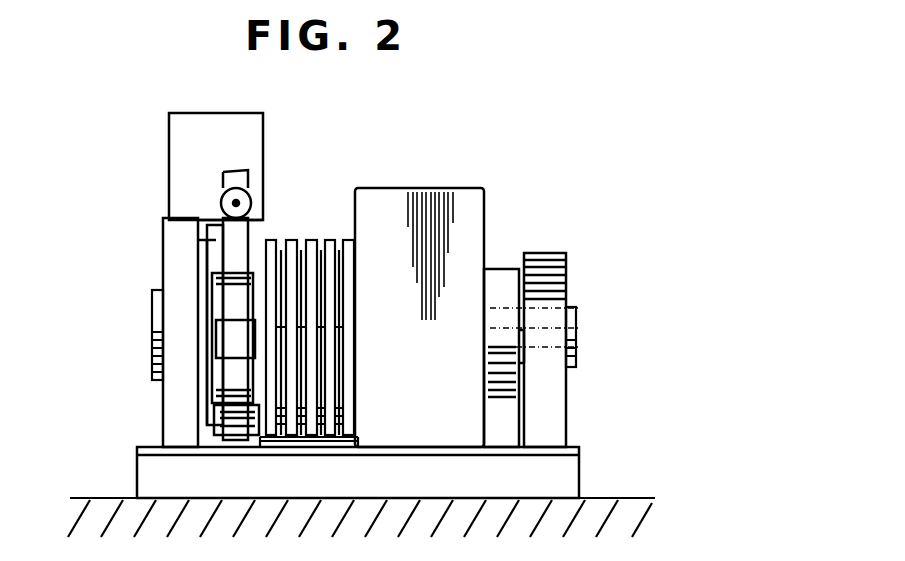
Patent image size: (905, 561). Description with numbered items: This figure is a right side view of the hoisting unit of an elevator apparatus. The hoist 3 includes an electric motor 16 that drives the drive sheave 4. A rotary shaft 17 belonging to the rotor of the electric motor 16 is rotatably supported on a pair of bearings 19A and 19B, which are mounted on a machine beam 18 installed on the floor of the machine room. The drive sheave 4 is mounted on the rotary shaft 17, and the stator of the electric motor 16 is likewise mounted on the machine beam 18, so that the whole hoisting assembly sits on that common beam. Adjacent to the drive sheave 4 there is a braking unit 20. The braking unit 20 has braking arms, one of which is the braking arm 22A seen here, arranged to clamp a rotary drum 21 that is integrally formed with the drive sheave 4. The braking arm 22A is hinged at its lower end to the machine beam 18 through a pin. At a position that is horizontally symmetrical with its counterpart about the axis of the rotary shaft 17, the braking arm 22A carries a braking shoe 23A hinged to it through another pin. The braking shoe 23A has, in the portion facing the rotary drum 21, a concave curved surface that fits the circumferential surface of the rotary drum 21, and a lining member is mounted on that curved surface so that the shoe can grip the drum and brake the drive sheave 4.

The hoist 3 is at (403, 180).
The drive sheave 4 is at (318, 238).
The electric motor 16 is at (470, 190).
The rotary shaft 17 is at (575, 347).
The machine beam 18 is at (572, 472).
The bearing 19A is at (548, 252).
The bearing 19B is at (177, 320).
The braking unit 20 is at (242, 242).
The rotary drum 21 is at (212, 258).
The braking arm 22A is at (233, 417).
The braking shoe 23A is at (213, 387).